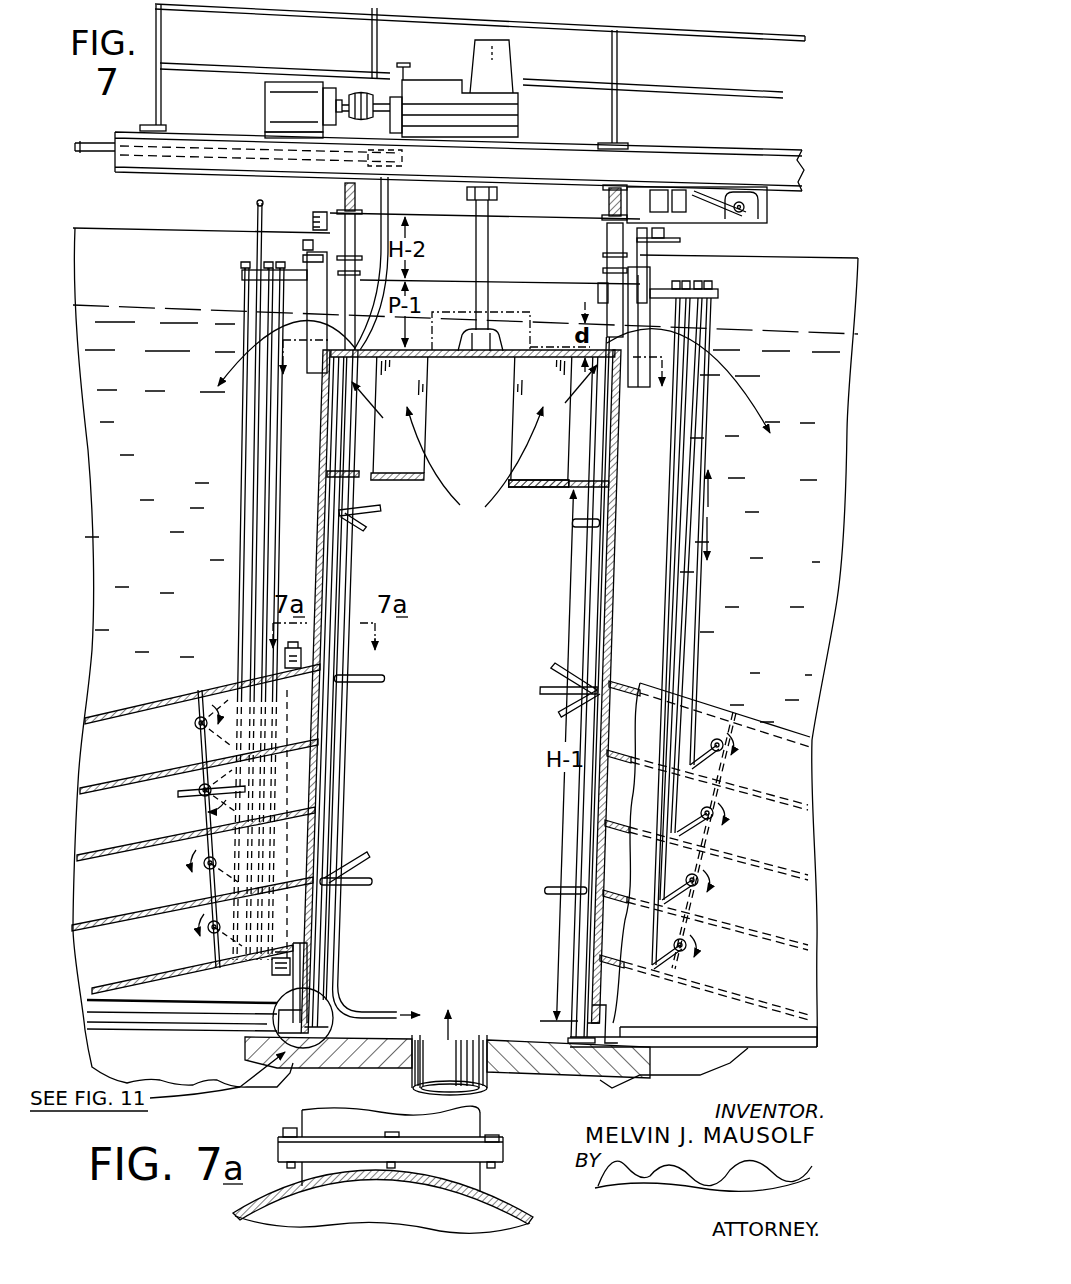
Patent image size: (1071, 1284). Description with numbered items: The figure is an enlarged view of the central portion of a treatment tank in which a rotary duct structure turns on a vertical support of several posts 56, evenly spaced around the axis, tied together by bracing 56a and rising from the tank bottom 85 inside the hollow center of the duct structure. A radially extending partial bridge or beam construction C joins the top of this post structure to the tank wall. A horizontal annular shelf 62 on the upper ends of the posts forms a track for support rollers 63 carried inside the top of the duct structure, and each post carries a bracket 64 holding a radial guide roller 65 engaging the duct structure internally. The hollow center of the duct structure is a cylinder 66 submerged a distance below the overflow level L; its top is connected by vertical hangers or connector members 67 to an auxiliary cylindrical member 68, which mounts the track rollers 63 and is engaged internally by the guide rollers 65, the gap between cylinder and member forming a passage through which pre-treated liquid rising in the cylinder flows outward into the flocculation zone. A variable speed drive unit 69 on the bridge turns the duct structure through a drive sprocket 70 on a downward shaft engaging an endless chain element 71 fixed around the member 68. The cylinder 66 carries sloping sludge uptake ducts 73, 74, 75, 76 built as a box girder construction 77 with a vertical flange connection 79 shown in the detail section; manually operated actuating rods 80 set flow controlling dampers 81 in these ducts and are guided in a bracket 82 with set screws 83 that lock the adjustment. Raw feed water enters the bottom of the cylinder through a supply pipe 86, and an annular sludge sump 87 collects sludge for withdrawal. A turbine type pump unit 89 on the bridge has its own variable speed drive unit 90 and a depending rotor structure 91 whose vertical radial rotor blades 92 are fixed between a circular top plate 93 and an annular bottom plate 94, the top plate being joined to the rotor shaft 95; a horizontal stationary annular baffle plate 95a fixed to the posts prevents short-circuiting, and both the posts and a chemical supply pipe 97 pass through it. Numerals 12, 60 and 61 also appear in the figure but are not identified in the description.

In FIG. 7, the section reference 12 is at (319, 396).
In FIG. 7, the posts 56 is at (340, 938).
In FIG. 7, the bracing 56a is at (381, 512).
In FIG. 7, the hanger stud 60 is at (343, 190).
In FIG. 7, the support beam 61 is at (727, 185).
In FIG. 7, the horizontal annular shelf 62 is at (603, 256).
In FIG. 7, the support rollers 63 is at (607, 233).
In FIG. 7, the bracket 64 is at (600, 290).
In FIG. 7, the radial guide roller 65 is at (603, 271).
In FIG. 7, the cylinder 66 is at (618, 598).
In FIG. 7a, the cylinder 66 is at (490, 1203).
In FIG. 7, the vertical hangers or connector members 67 is at (316, 297).
In FIG. 7, the auxiliary cylindrical member 68 is at (313, 224).
In FIG. 7, the variable speed drive unit 69 is at (722, 228).
In FIG. 7, the drive sprocket 70 is at (682, 240).
In FIG. 7, the endless chain element 71 is at (643, 235).
In FIG. 7, the sludge uptake duct 73 is at (92, 769).
In FIG. 7, the sludge uptake duct 74 is at (107, 823).
In FIG. 7, the sludge uptake duct 75 is at (99, 890).
In FIG. 7, the sludge uptake duct 76 is at (108, 953).
In FIG. 7, the box girder construction 77 is at (167, 690).
In FIG. 7, the vertical flange connection 79 is at (270, 977).
In FIG. 7a, the vertical flange connection 79 is at (503, 1150).
In FIG. 7, the actuating rods 80 is at (272, 518).
In FIG. 7, the flow controlling dampers 81 is at (195, 725).
In FIG. 7, the bracket 82 is at (307, 262).
In FIG. 7, the set screws 83 is at (242, 275).
In FIG. 7, the tank bottom 85 is at (505, 1047).
In FIG. 7, the supply pipe 86 is at (412, 1081).
In FIG. 7, the annular sludge sump 87 is at (207, 1056).
In FIG. 7, the turbine type pump unit 89 is at (526, 127).
In FIG. 7, the variable speed drive unit 90 is at (470, 88).
In FIG. 7, the rotor structure 91 is at (497, 332).
In FIG. 7, the rotor blades 92 is at (413, 396).
In FIG. 7, the circular top plate 93 is at (455, 359).
In FIG. 7, the annular bottom plate 94 is at (540, 488).
In FIG. 7, the rotor shaft 95 is at (489, 258).
In FIG. 7, the stationary annular baffle plate 95a is at (585, 495).
In FIG. 7, the chemical supply pipe 97 is at (103, 155).
In FIG. 7, the bridge or beam construction C is at (708, 148).
In FIG. 7, the overflow level L is at (142, 308).